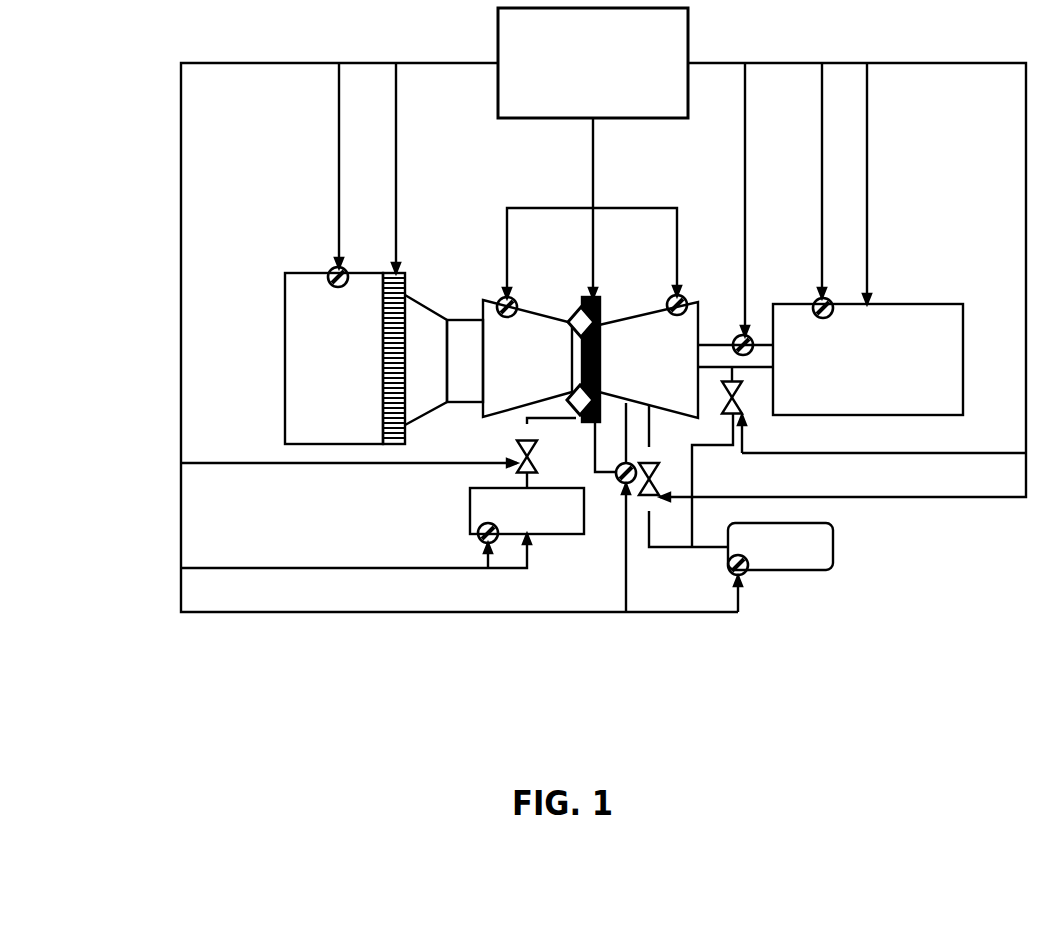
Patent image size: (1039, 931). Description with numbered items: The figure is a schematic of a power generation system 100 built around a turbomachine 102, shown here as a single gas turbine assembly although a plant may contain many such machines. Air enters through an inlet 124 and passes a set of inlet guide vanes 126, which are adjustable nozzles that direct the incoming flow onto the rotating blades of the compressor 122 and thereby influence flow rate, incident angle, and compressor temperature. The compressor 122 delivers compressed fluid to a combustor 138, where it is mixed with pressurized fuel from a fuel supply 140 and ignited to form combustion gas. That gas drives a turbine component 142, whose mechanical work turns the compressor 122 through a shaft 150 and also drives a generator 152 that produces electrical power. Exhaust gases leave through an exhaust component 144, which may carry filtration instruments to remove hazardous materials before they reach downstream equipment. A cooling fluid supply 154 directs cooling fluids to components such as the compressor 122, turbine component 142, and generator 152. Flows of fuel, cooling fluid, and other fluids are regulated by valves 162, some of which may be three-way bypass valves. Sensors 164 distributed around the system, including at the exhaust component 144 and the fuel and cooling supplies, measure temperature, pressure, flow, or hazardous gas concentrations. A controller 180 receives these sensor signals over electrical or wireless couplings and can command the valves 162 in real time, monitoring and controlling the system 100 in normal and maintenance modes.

The power generation system 100 is at (128, 93).
The turbomachine 102 is at (270, 336).
The compressor 122 is at (435, 392).
The inlet 124 is at (350, 370).
The inlet guide vanes 126 is at (395, 445).
The combustor 138 is at (556, 375).
The fuel supply 140 is at (527, 511).
The turbine component 142 is at (666, 366).
The exhaust component 144 is at (610, 437).
The shaft 150 is at (713, 358).
The generator 152 is at (883, 373).
The cooling fluid supply 154 is at (780, 546).
The valve 162 is at (533, 464).
The sensor 164 is at (332, 270).
The controller 180 is at (603, 80).